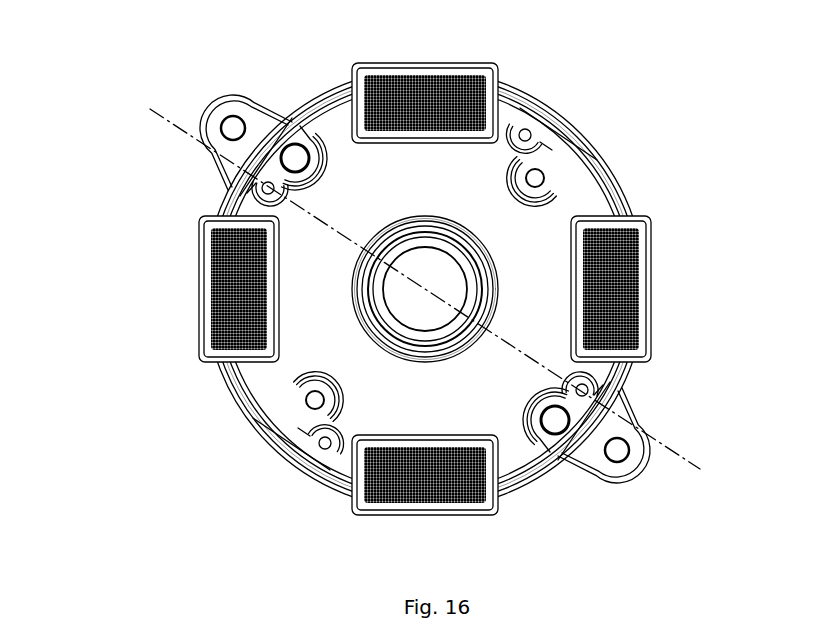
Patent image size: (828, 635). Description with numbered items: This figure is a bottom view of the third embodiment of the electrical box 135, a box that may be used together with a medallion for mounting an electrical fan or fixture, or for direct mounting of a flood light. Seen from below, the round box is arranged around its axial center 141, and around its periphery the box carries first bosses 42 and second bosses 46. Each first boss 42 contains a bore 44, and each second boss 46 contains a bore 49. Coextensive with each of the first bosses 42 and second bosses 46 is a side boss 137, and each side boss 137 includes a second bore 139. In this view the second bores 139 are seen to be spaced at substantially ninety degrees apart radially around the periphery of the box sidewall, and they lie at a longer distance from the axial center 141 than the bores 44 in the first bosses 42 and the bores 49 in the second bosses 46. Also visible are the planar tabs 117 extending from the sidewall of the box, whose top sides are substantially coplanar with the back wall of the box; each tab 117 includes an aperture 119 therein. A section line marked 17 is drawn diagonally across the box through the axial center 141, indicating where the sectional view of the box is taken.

The electrical box 135 is at (132, 204).
The section line 17 is at (182, 57).
The bore 49 is at (294, 152).
The second bore 139 is at (526, 133).
The second boss 46 is at (312, 165).
The axial center 141 is at (428, 282).
The side boss 137 is at (360, 243).
The first boss 42 is at (337, 378).
The bore 44 is at (403, 404).
The planar tab 117 is at (637, 478).
The aperture 119 is at (615, 450).